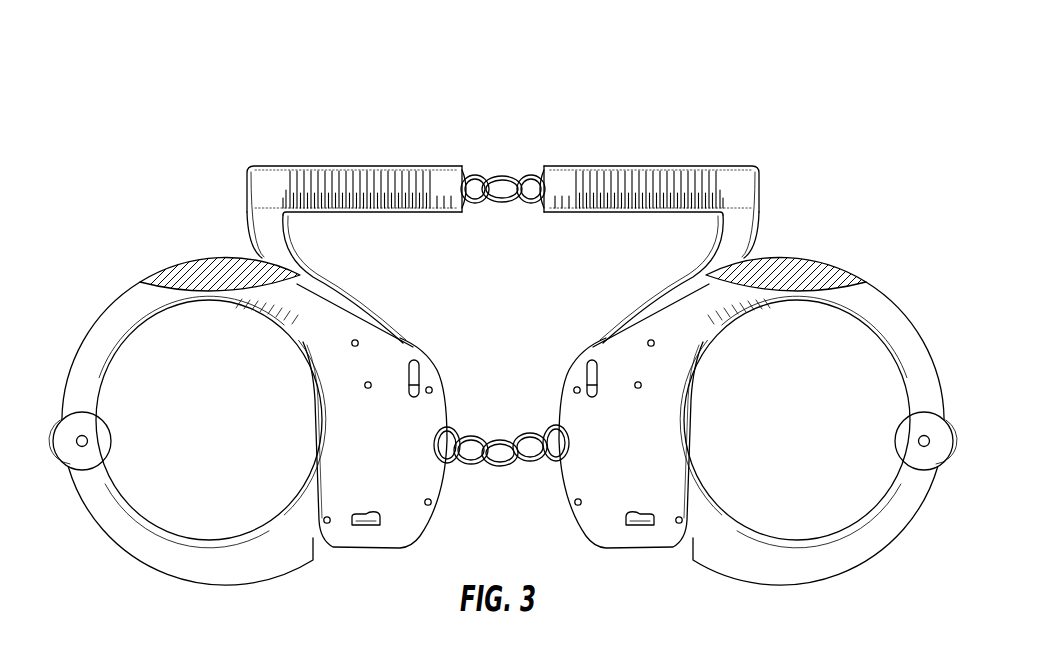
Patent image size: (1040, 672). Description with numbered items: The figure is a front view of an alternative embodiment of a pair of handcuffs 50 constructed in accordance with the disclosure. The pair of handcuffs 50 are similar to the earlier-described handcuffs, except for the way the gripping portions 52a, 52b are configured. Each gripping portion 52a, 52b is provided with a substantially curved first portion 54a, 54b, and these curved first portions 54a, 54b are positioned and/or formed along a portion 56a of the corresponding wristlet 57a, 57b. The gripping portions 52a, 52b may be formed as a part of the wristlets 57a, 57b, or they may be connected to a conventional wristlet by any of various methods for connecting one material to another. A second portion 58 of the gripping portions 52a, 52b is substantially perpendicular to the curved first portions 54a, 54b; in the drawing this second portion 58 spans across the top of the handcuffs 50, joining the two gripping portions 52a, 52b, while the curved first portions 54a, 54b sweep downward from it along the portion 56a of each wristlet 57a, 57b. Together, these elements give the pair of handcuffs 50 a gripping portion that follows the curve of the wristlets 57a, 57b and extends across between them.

The pair of handcuffs 50 is at (591, 62).
The gripping portion 52a is at (253, 188).
The gripping portion 52b is at (617, 180).
The first portion 54a is at (263, 258).
The first portion 54b is at (727, 259).
The portion of wristlet 56a is at (140, 282).
The wristlet 57a is at (75, 413).
The wristlet 57b is at (928, 397).
The second portion 58 is at (373, 178).